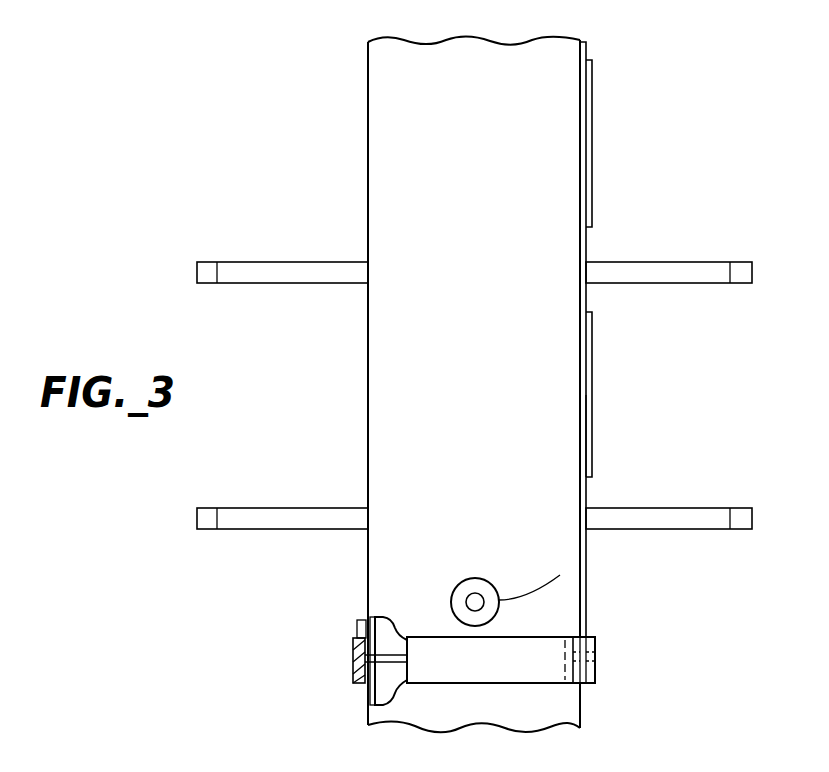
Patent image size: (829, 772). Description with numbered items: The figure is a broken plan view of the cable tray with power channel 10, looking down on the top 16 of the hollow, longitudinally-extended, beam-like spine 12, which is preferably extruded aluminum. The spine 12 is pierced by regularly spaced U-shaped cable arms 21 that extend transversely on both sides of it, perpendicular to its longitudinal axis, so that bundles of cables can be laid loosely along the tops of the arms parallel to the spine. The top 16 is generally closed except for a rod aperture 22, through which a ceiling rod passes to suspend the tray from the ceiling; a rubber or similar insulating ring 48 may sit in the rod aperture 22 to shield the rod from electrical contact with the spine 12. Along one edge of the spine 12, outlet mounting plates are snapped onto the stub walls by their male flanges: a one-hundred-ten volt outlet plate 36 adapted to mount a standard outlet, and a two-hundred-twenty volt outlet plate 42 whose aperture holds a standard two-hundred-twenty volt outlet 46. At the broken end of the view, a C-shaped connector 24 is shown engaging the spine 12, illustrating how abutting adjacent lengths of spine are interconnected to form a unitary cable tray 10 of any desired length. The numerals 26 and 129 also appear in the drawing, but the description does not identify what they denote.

The cable tray with power channel 10 is at (634, 63).
The spine 12 is at (515, 50).
The top 16 is at (368, 143).
The cable arms 21 is at (736, 261).
The rod apertures 22 is at (458, 592).
The C-shaped connector 24 is at (342, 660).
The rail 26 is at (598, 246).
The 110 V outlet plate 36 is at (594, 149).
The 220 V outlet plate 42 is at (594, 352).
The 220 V outlet 46 is at (594, 400).
The insulating rings 48 is at (560, 575).
The lower housing portion 129 is at (568, 703).